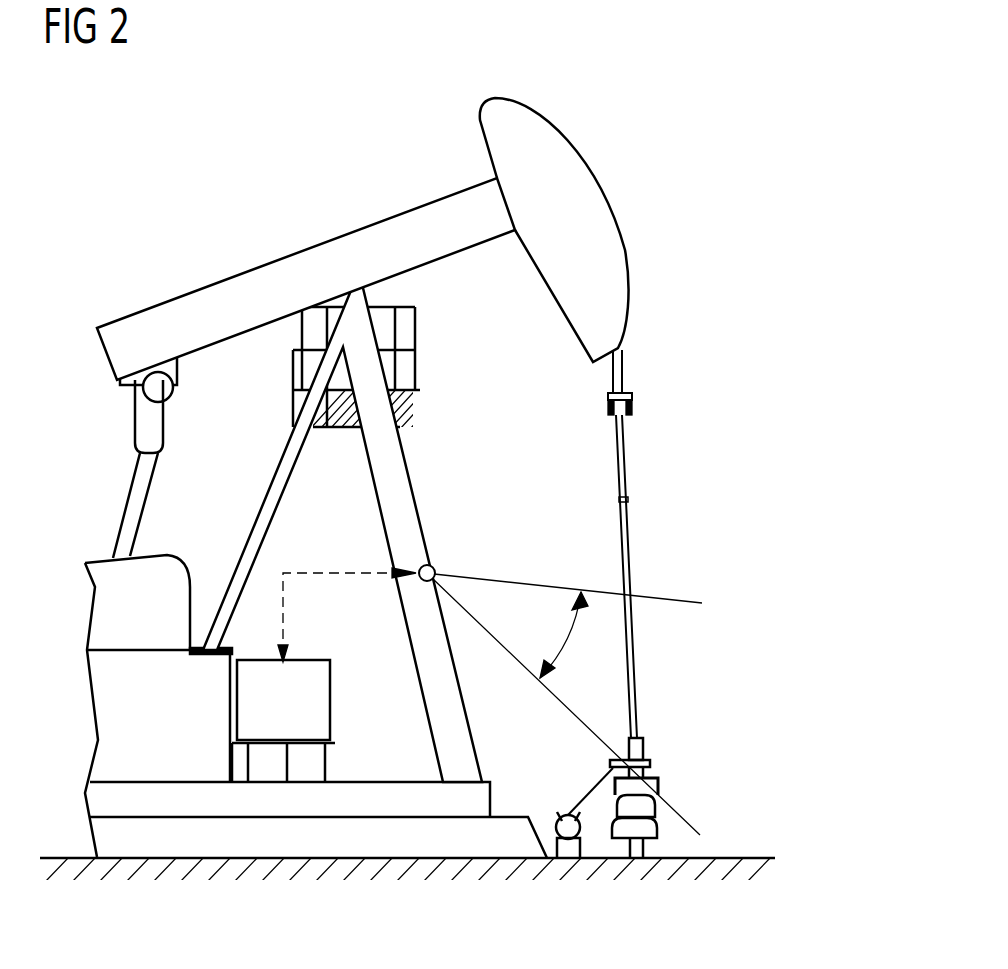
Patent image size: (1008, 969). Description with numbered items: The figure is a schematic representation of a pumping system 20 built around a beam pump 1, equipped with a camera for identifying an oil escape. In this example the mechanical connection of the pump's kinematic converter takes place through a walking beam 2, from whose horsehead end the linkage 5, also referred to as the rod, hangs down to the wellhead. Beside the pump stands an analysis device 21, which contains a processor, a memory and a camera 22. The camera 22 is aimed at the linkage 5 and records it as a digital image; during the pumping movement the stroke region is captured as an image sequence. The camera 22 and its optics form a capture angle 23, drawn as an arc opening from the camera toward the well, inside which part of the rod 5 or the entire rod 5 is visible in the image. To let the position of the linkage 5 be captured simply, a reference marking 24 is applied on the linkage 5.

The beam pump 1 is at (166, 156).
The walking beam 2 is at (293, 253).
The pumping system 20 is at (628, 139).
The analysis device 21 is at (333, 702).
The camera 22 is at (434, 566).
The capture angle 23 is at (568, 640).
The reference marking 24 is at (648, 386).
The linkage 5 is at (633, 547).